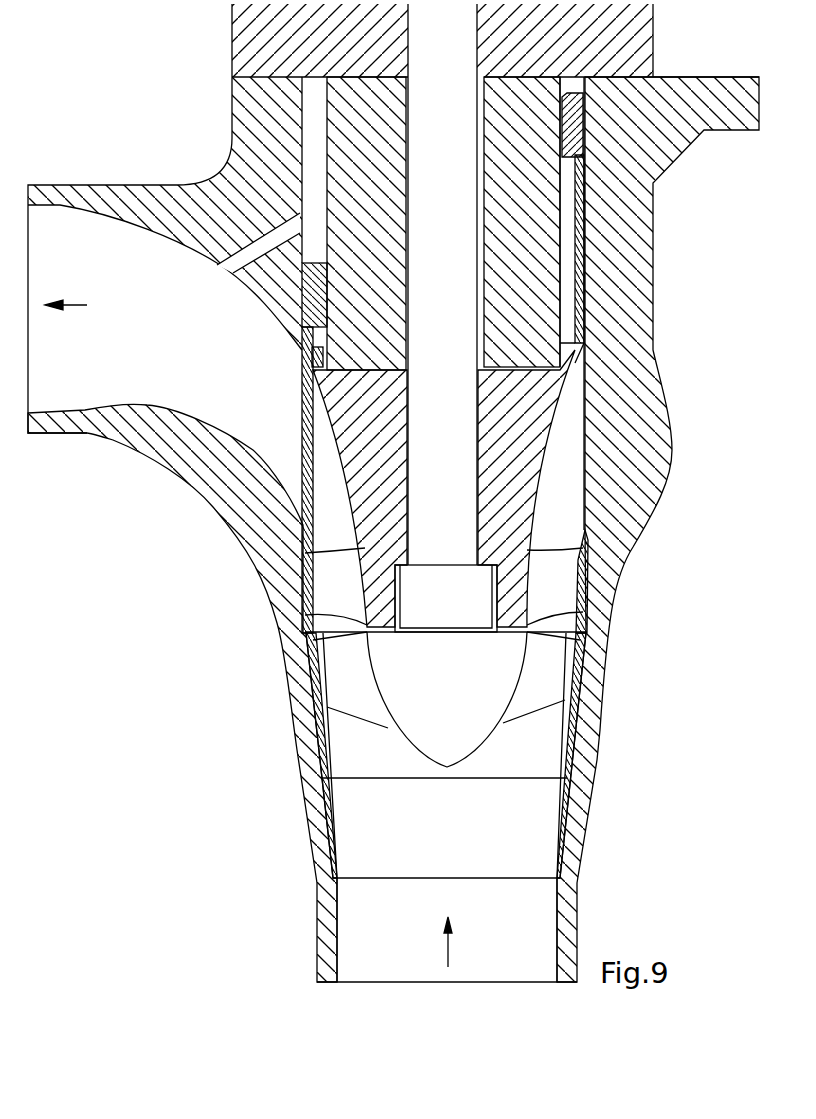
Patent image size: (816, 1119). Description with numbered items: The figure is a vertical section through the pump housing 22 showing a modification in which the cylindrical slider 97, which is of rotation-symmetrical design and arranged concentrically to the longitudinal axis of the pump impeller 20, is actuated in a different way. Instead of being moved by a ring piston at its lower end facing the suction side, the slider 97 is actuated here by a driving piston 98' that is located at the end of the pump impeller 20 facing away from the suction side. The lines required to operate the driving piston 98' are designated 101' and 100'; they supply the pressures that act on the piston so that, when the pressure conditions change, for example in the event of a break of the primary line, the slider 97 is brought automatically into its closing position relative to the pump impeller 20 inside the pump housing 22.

The pump impeller 20 is at (477, 737).
The pump housing 22 is at (653, 456).
The slider 97 is at (307, 427).
The driving piston 98' is at (411, 218).
The line 100' is at (295, 376).
The line 101' is at (239, 260).